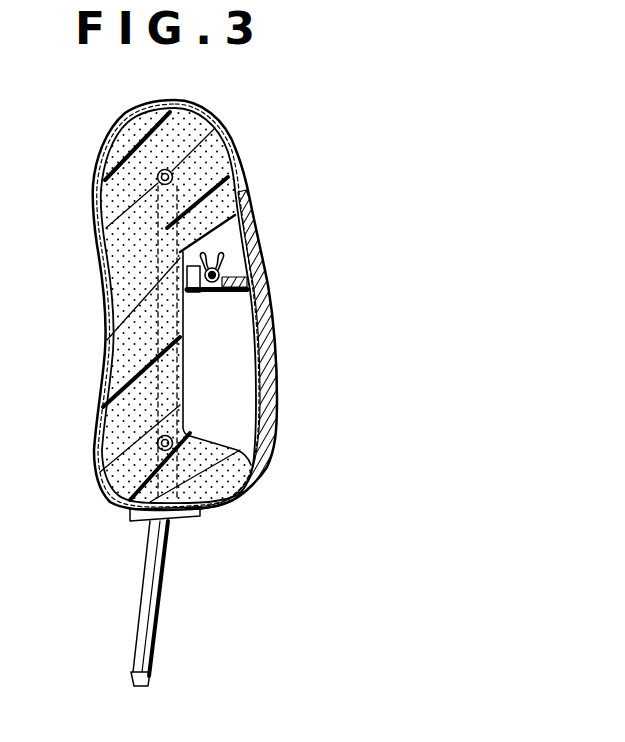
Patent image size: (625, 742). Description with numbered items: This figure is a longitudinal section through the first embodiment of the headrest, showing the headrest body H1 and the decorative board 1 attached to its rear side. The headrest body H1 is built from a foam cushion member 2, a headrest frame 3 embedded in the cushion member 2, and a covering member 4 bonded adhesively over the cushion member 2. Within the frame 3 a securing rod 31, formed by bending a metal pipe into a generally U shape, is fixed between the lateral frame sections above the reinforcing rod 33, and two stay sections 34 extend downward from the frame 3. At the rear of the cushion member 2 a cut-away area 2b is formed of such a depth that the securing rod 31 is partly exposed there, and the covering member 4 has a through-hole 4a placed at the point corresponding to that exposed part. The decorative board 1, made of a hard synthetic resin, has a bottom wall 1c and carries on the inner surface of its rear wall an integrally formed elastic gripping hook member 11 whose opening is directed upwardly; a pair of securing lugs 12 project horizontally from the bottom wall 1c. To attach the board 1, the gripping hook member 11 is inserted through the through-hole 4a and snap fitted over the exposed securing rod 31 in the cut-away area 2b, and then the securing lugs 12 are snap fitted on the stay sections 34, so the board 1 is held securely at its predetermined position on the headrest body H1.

The headrest body H1 is at (86, 193).
The decorative board 1 is at (275, 400).
The bottom wall 1c is at (217, 516).
The foam cushion member 2 is at (110, 270).
The cut-away area 2b is at (238, 344).
The headrest frame 3 is at (177, 173).
The covering member 4 is at (100, 391).
The through-hole 4a is at (257, 308).
The gripping hook member 11 is at (224, 266).
The securing lug 12 is at (137, 519).
The securing rod 31 is at (213, 243).
The reinforcing rod 33 is at (157, 443).
The stay section 34 is at (160, 606).